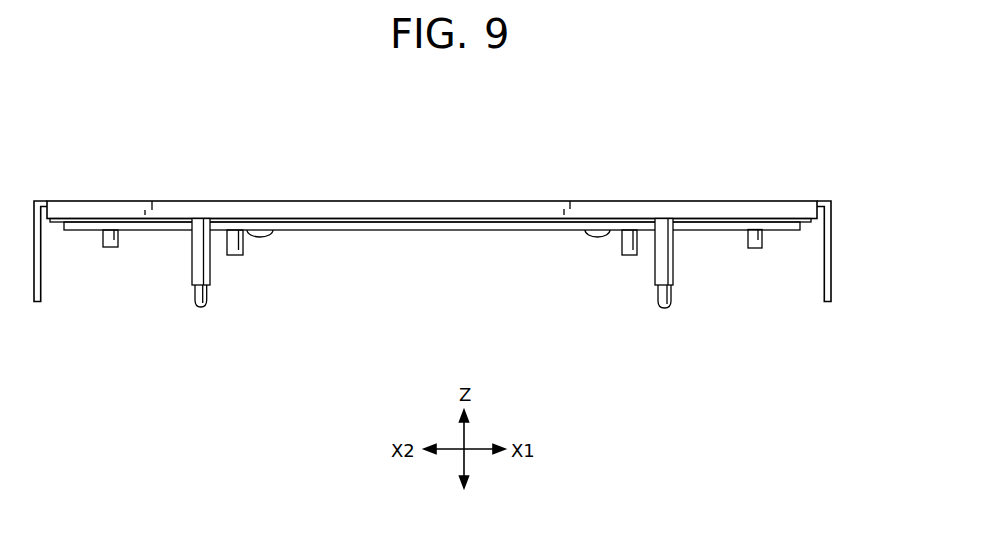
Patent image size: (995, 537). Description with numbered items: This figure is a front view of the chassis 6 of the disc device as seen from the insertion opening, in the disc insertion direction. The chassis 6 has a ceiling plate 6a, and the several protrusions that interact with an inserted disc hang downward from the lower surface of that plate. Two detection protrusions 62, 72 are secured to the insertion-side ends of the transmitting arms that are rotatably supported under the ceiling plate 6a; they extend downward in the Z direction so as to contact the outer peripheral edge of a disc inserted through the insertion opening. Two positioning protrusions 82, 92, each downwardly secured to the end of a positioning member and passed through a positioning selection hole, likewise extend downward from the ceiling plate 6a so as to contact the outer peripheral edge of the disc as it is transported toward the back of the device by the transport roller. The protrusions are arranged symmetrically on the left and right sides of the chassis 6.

The chassis 6 is at (832, 247).
The ceiling plate 6a is at (512, 201).
The detection protrusion 62 is at (200, 278).
The detection protrusion 72 is at (668, 269).
The positioning protrusion 82 is at (232, 257).
The positioning protrusion 92 is at (627, 257).